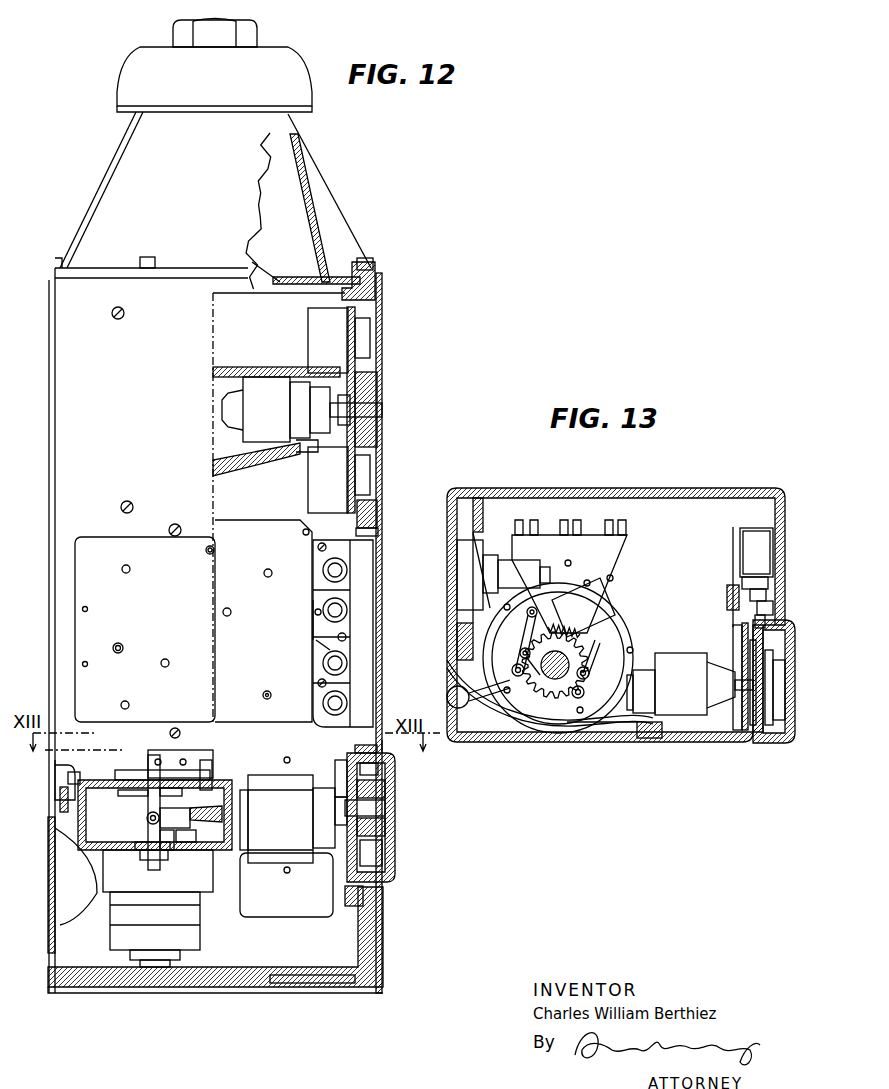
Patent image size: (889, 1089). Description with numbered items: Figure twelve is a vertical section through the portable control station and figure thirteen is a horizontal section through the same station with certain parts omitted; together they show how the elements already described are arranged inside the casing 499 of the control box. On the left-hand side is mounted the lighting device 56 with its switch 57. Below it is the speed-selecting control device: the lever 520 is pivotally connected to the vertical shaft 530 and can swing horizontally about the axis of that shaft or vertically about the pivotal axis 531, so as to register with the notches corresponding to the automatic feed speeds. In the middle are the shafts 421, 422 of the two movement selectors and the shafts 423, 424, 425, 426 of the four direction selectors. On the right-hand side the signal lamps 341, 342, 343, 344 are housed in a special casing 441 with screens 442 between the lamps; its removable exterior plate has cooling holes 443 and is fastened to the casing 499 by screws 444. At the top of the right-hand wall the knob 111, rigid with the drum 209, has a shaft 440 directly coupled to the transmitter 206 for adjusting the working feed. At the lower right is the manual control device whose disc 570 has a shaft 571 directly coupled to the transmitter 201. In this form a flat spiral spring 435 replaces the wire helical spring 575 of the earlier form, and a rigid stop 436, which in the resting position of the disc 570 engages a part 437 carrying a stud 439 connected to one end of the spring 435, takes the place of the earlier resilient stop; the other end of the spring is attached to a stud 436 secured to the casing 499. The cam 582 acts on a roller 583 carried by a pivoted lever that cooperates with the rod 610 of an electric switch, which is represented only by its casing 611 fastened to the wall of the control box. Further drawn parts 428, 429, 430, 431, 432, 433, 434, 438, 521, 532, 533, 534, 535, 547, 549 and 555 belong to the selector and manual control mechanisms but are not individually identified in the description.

In FIG. 12, the lighting device 56 is at (80, 833).
In FIG. 13, the lighting device 56 is at (478, 528).
In FIG. 12, the switch 57 is at (60, 790).
In FIG. 13, the switch 57 is at (475, 579).
In FIG. 12, the knob 111 is at (370, 383).
In FIG. 12, the transmitter 201 is at (262, 785).
In FIG. 13, the transmitter 201 is at (685, 660).
In FIG. 12, the transmitter 206 is at (258, 388).
In FIG. 12, the drum 209 is at (304, 530).
In FIG. 12, the signal lamp 341 is at (348, 568).
In FIG. 12, the signal lamp 342 is at (348, 610).
In FIG. 12, the signal lamp 343 is at (348, 663).
In FIG. 12, the signal lamp 344 is at (348, 700).
In FIG. 12, the shaft of movement selector 421 is at (130, 567).
In FIG. 12, the shaft of movement selector 422 is at (264, 691).
In FIG. 12, the shaft of direction selector 423 is at (268, 577).
In FIG. 12, the shaft of direction selector 424 is at (230, 615).
In FIG. 12, the shaft of direction selector 425 is at (168, 660).
In FIG. 12, the shaft of direction selector 426 is at (129, 702).
In FIG. 12, the post 428 is at (212, 783).
In FIG. 12, the spacer 429 is at (168, 840).
In FIG. 12, the spacer 430 is at (195, 838).
In FIG. 12, the link 431 is at (170, 788).
In FIG. 13, the link 431 is at (540, 677).
In FIG. 12, the pivot 432 is at (125, 790).
In FIG. 13, the pivot 432 is at (521, 652).
In FIG. 13, the pivot 433 is at (530, 616).
In FIG. 13, the link 434 is at (595, 626).
In FIG. 12, the flat spiral spring 435 is at (385, 860).
In FIG. 12, the rigid stop 436 is at (368, 876).
In FIG. 12, the part 437 is at (398, 776).
In FIG. 12, the coupling 438 is at (337, 803).
In FIG. 12, the stud 439 is at (342, 770).
In FIG. 12, the shaft 440 is at (303, 452).
In FIG. 12, the casing 441 is at (310, 622).
In FIG. 12, the screens 442 is at (322, 646).
In FIG. 12, the holes 443 is at (376, 652).
In FIG. 12, the screws 444 is at (380, 531).
In FIG. 12, the casing of the control box 499 is at (378, 512).
In FIG. 13, the lever 520 is at (478, 700).
In FIG. 13, the frame 521 is at (520, 727).
In FIG. 12, the vertical shaft 530 is at (148, 816).
In FIG. 13, the vertical shaft 530 is at (555, 680).
In FIG. 12, the pivotal axis 531 is at (150, 855).
In FIG. 12, the housing 532 is at (146, 795).
In FIG. 12, the washer 533 is at (145, 845).
In FIG. 12, the wedge 534 is at (172, 808).
In FIG. 12, the base unit 535 is at (200, 918).
In FIG. 12, the bracket 547 is at (210, 770).
In FIG. 13, the bracket 547 is at (595, 607).
In FIG. 12, the support 549 is at (214, 870).
In FIG. 12, the ring frame 555 is at (180, 826).
In FIG. 13, the ring frame 555 is at (612, 650).
In FIG. 12, the disc 570 is at (390, 778).
In FIG. 13, the disc 570 is at (786, 712).
In FIG. 12, the shaft 571 is at (372, 808).
In FIG. 13, the wire helical spring 575 is at (745, 735).
In FIG. 12, the cam 582 is at (378, 770).
In FIG. 13, the cam 582 is at (752, 648).
In FIG. 13, the roller 583 is at (748, 606).
In FIG. 13, the rod 610 is at (750, 585).
In FIG. 13, the casing 611 is at (750, 535).